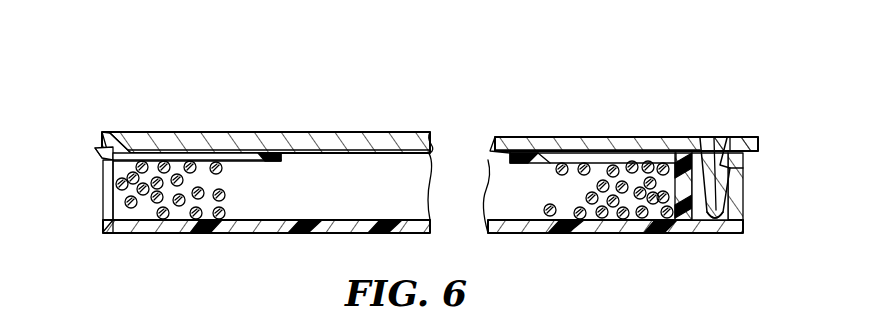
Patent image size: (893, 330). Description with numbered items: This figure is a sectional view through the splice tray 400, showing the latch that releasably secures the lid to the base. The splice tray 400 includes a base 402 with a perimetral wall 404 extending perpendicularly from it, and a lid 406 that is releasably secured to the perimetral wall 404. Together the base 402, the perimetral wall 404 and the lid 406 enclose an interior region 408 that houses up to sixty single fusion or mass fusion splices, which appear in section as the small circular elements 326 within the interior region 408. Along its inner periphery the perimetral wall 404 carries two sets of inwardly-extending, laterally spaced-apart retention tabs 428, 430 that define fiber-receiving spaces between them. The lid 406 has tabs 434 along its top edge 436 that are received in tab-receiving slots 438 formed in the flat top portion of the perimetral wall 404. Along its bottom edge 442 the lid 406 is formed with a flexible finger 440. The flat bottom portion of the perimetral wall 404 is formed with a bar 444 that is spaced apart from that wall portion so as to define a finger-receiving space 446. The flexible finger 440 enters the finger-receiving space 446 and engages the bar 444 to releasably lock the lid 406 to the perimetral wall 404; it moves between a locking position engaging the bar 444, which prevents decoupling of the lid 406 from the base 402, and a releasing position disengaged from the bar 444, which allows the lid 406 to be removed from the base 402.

The spherical particles 326 is at (219, 162).
The splice tray 400 is at (675, 125).
The base 402 is at (328, 237).
The perimetral wall 404 is at (682, 235).
The lid 406 is at (360, 133).
The interior region 408 is at (392, 180).
The retention tab 428 is at (273, 159).
The retention tab 430 is at (200, 233).
The tab 434 is at (97, 157).
The top edge 436 is at (122, 138).
The tab-receiving slot 438 is at (107, 185).
The flexible finger 440 is at (725, 183).
The bottom edge 442 is at (773, 119).
The bar 444 is at (712, 141).
The finger-receiving space 446 is at (710, 226).